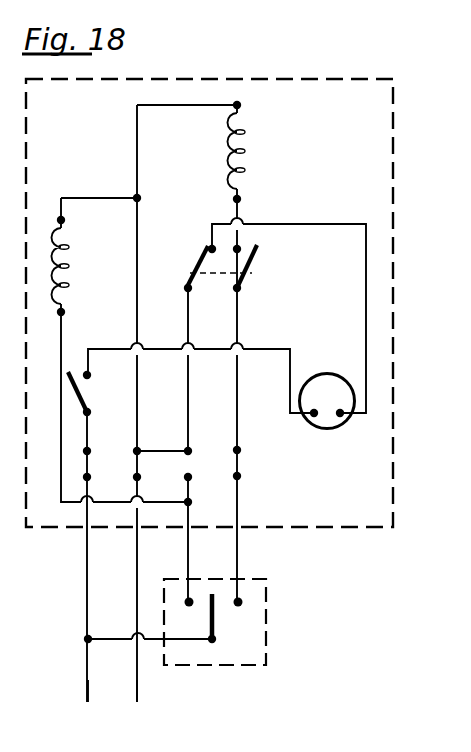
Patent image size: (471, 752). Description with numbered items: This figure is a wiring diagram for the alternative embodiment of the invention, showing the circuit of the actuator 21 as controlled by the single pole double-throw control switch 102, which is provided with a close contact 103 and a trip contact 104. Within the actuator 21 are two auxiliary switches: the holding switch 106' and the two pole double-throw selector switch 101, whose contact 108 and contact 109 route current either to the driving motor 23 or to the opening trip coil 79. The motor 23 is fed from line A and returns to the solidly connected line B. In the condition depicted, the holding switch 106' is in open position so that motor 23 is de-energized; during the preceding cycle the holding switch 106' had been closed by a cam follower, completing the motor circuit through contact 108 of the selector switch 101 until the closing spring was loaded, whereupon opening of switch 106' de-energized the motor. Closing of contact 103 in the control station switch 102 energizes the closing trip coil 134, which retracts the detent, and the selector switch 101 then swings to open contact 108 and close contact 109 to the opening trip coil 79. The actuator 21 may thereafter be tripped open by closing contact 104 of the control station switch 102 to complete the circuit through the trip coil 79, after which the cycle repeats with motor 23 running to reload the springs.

The actuator 21 is at (398, 198).
The opening trip coil 79 is at (246, 151).
The closing trip coil 134 is at (68, 266).
The selector switch finger (contact) 108 is at (199, 258).
The contact of selector switch 109 is at (259, 258).
The selector switch 101 is at (247, 276).
The holding switch 106' is at (101, 388).
The driving motor 23 is at (340, 407).
The control switch (control station switch) 102 is at (268, 610).
The close contact 103 is at (187, 600).
The trip contact 104 is at (240, 600).
The line A is at (87, 691).
The line B is at (139, 691).